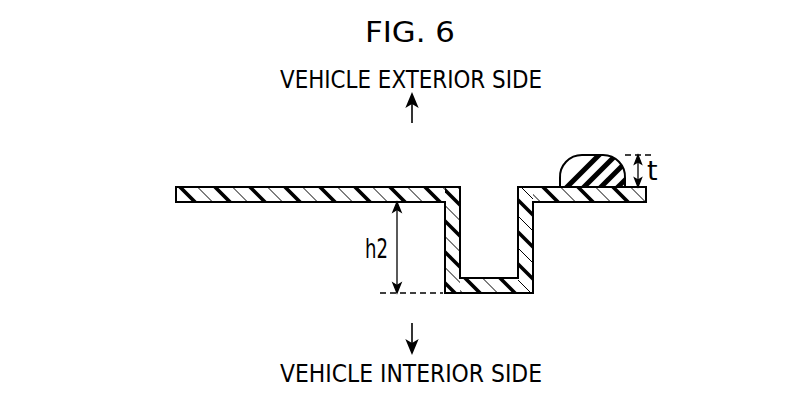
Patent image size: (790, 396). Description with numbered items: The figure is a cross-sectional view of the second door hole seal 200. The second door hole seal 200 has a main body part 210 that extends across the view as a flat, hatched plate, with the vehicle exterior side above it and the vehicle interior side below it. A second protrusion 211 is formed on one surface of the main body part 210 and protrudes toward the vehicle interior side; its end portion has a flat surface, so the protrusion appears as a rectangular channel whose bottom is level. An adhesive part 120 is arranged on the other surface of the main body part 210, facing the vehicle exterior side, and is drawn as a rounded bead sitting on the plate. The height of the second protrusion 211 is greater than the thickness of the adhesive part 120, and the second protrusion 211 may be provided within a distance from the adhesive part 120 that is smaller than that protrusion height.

The second door hole seal 200 is at (152, 190).
The main body part 210 is at (230, 193).
The second protrusion 211 is at (491, 293).
The adhesive part 120 is at (593, 157).